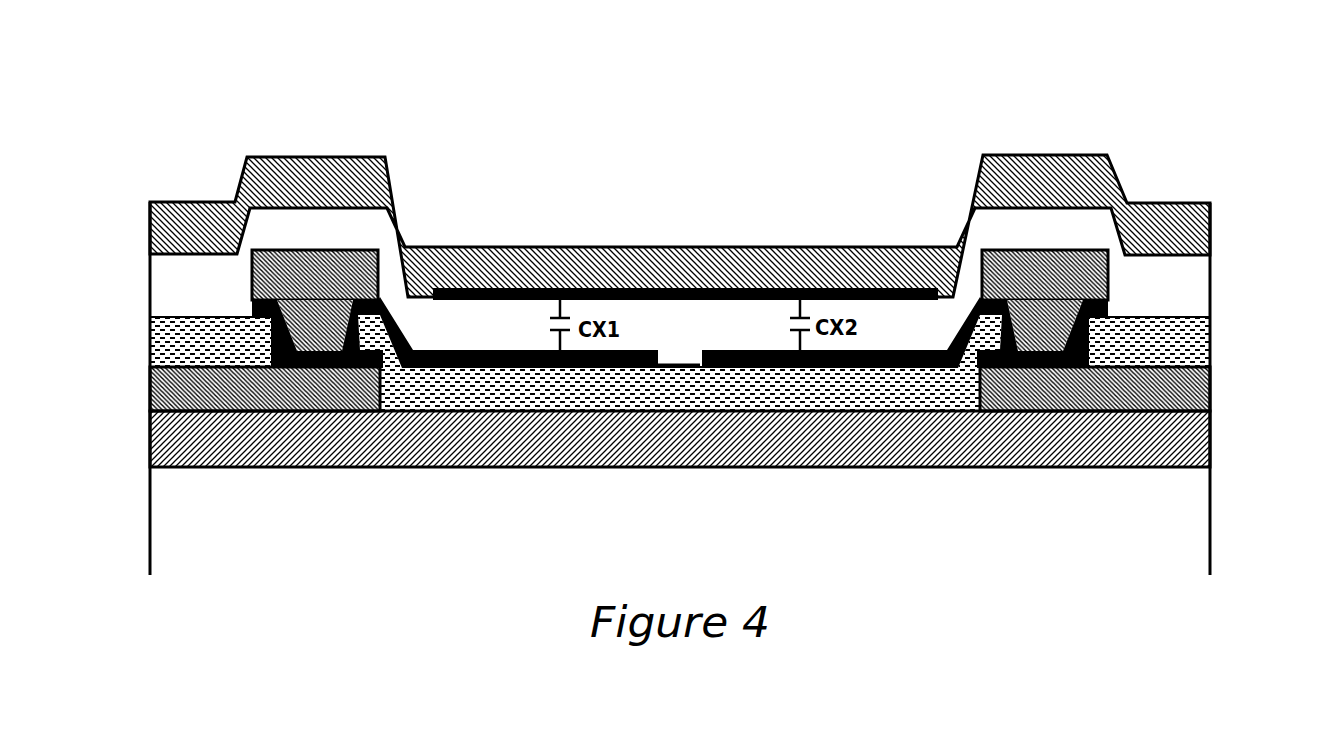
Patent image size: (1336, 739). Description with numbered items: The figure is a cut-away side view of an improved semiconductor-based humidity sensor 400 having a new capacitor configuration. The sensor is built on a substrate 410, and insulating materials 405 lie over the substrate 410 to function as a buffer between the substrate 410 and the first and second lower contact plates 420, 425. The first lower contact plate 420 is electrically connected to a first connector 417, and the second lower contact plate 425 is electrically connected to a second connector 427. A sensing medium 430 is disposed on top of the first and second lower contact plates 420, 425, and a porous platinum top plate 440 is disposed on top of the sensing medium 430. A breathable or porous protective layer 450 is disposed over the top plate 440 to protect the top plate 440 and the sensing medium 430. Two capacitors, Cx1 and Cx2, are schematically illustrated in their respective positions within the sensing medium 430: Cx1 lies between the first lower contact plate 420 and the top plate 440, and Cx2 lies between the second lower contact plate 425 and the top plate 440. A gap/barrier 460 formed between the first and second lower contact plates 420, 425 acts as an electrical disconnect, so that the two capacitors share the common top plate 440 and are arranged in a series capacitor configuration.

The humidity sensor 400 is at (234, 110).
The insulating materials 405 is at (1210, 435).
The substrate 410 is at (1210, 523).
The first connector 417 is at (150, 387).
The second connector 427 is at (1210, 392).
The first lower contact plate 420 is at (580, 367).
The second lower contact plate 425 is at (822, 367).
The sensing medium 430 is at (507, 340).
The porous platinum top plate 440 is at (773, 290).
The protective layer 450 is at (630, 245).
The gap/barrier 460 is at (682, 357).